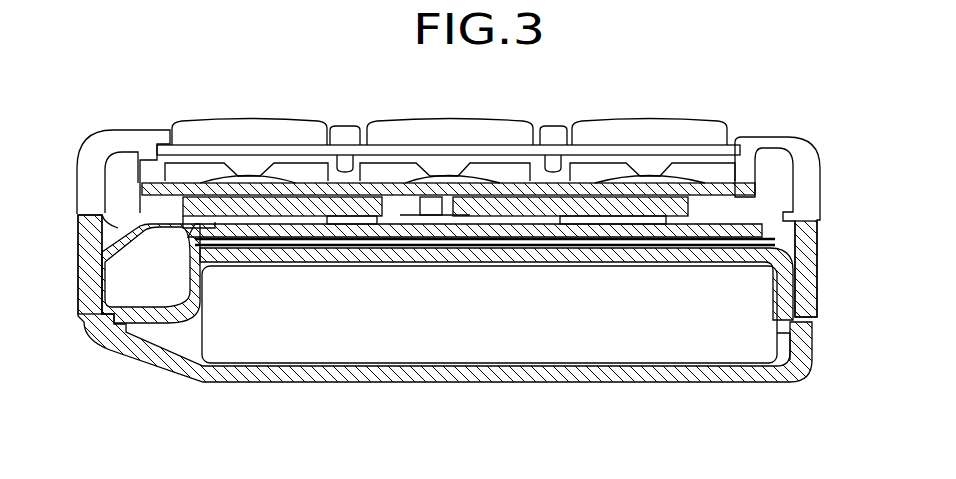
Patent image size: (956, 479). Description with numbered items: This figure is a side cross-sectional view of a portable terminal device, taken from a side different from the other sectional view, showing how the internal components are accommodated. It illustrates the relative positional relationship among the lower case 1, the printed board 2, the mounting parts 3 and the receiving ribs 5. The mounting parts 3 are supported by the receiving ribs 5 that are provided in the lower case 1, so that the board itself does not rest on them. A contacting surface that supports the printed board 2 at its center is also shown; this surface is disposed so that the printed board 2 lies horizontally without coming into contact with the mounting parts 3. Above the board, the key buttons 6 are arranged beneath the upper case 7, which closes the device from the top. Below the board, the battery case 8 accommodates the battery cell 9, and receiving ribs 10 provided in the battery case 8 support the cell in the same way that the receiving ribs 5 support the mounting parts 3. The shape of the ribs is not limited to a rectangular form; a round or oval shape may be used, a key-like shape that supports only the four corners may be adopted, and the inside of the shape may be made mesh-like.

The lower case 1 is at (745, 190).
The printed board 2 is at (718, 223).
The mounting parts 3 is at (603, 185).
The receiving ribs 5 is at (532, 200).
The key buttons 6 is at (648, 130).
The upper case 7 is at (805, 187).
The battery case 8 is at (705, 250).
The battery cell 9 is at (432, 335).
The receiving ribs 10 is at (551, 265).